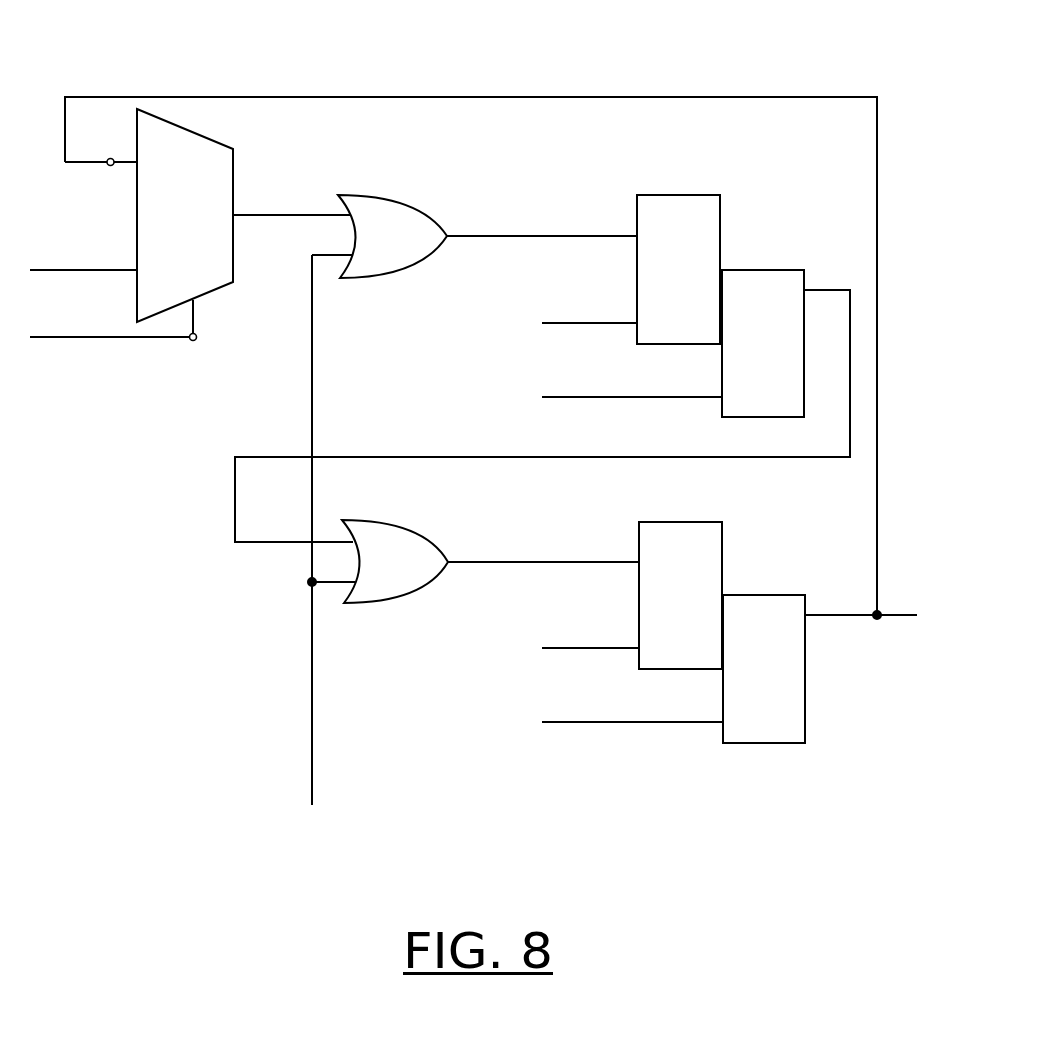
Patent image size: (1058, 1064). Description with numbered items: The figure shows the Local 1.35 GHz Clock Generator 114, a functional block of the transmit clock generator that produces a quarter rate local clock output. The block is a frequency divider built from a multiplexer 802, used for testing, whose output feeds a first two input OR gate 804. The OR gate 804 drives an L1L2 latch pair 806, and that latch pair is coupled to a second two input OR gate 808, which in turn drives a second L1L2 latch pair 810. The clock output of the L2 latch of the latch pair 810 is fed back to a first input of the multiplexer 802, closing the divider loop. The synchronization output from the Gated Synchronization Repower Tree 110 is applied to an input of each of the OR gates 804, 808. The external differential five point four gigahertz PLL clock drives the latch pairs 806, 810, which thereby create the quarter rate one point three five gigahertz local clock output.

The Local 1.35 GHz Clock Generator 114 is at (471, 316).
The multiplexer 802 is at (190, 225).
The first two input OR gate 804 is at (474, 236).
The L1L2 latch pair 806 is at (542, 368).
The second two input OR gate 808 is at (473, 561).
The L1L2 latch pair 810 is at (729, 632).
The Gated Synchronization Repower Tree 110 is at (315, 560).